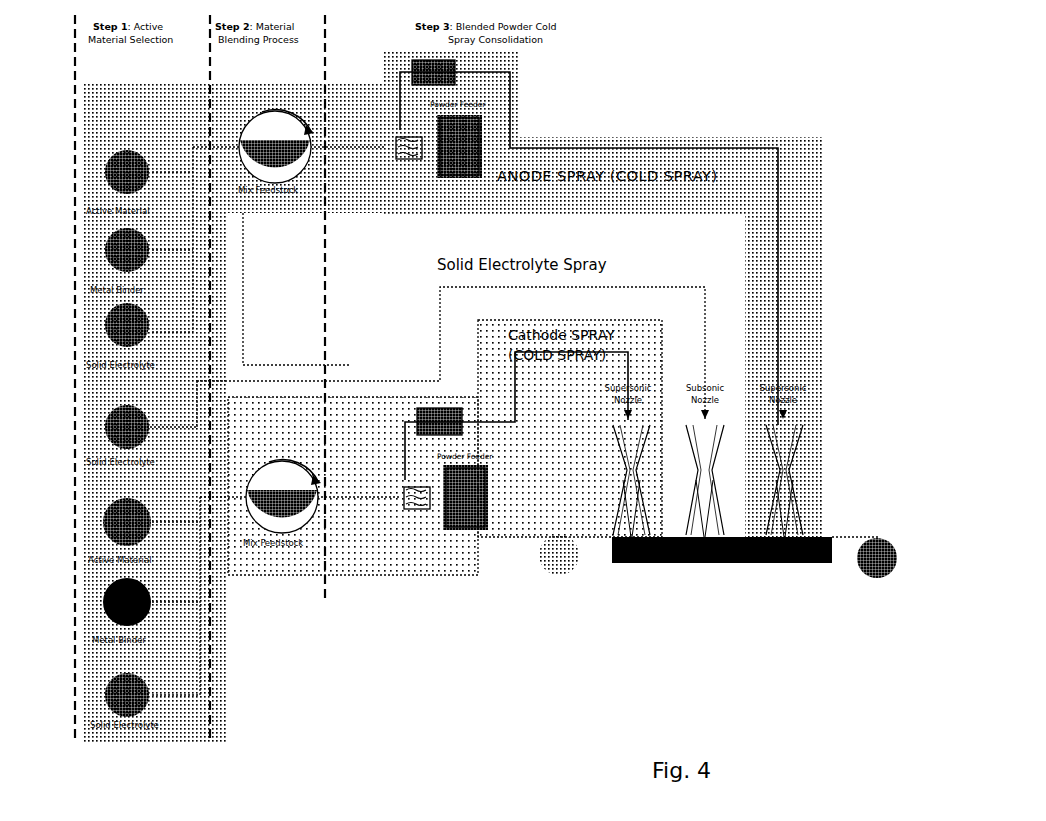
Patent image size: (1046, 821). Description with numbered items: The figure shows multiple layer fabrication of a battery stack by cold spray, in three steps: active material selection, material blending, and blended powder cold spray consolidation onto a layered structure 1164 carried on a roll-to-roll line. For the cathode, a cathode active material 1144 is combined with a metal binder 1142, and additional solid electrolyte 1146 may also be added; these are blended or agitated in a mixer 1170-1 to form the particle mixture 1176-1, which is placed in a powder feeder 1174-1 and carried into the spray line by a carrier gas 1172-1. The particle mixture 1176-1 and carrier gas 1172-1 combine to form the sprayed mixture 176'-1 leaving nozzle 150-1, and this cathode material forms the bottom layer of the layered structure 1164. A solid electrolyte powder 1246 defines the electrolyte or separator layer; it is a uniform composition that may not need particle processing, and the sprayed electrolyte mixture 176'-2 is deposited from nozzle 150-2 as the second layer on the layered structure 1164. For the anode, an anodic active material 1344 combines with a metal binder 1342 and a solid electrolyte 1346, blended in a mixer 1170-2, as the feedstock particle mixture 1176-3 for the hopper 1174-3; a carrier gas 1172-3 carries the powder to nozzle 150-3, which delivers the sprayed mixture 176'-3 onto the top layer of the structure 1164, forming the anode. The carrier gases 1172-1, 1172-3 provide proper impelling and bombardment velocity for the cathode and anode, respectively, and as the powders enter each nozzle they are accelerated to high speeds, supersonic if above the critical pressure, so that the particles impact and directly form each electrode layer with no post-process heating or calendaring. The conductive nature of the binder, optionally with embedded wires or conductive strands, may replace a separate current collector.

The anodic active material 1344 is at (102, 176).
The metal binder 1342 is at (106, 253).
The solid electrolyte 1346 is at (102, 331).
The solid electrolyte powder 1246 is at (100, 424).
The cathode active material 1144 is at (102, 531).
The metal binder 1142 is at (106, 608).
The solid electrolyte 1146 is at (102, 696).
The mixer 1170-2 is at (270, 111).
The mixer 1170-1 is at (280, 461).
The feedstock particle mixture 1176-3 is at (455, 165).
The hopper 1174-3 is at (470, 182).
The carrier gas 1172-3 is at (413, 182).
The particle mixture 1176-1 is at (470, 497).
The powder feeder 1174-1 is at (479, 535).
The carrier gas 1172-1 is at (418, 527).
The nozzle 150-1 is at (613, 433).
The nozzle 150-2 is at (728, 428).
The nozzle 150-3 is at (800, 432).
The sprayed mixture 176'-1 is at (590, 508).
The sprayed electrolyte mixture 176'-2 is at (681, 496).
The sprayed mixture 176'-3 is at (830, 485).
The layered structure 1164 is at (855, 535).